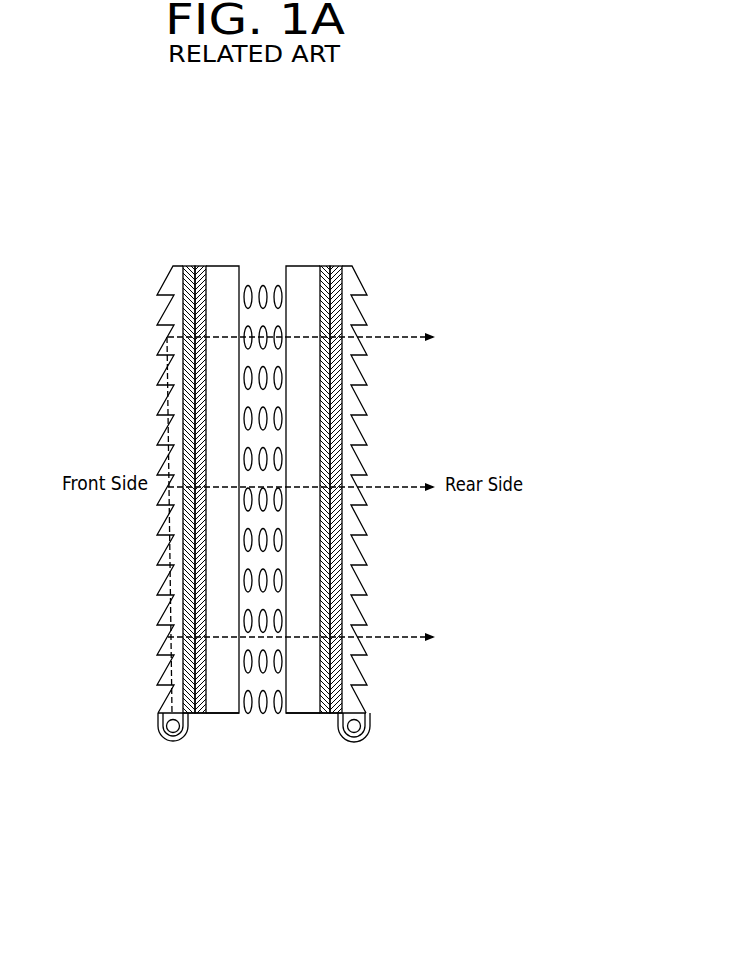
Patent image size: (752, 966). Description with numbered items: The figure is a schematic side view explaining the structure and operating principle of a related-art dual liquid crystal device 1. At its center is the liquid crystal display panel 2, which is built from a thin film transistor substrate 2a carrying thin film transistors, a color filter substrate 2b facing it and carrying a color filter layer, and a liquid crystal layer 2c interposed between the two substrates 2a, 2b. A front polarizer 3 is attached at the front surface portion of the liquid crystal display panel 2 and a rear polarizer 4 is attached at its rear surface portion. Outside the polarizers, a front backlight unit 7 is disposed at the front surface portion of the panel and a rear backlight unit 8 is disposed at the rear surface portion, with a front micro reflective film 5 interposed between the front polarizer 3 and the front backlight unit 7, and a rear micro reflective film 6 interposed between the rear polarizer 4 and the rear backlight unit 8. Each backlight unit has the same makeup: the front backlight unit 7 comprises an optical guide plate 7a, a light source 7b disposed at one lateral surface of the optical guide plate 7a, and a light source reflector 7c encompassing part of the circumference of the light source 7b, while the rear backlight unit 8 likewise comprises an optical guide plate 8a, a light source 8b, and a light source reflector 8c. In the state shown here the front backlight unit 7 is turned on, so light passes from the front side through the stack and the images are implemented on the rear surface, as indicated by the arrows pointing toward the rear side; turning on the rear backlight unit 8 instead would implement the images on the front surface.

The dual liquid crystal device 1 is at (381, 251).
The liquid crystal display panel 2 is at (217, 211).
The thin film transistor substrate 2a is at (226, 278).
The color filter substrate 2b is at (300, 278).
The liquid crystal layer 2c is at (263, 283).
The front polarizer 3 is at (198, 267).
The rear polarizer 4 is at (325, 267).
The front micro reflective film 5 is at (188, 267).
The rear micro reflective film 6 is at (333, 267).
The front backlight unit 7 is at (110, 795).
The optical guide plate 7a is at (160, 700).
The light source 7b is at (170, 737).
The light source reflector 7c is at (159, 737).
The rear backlight unit 8 is at (328, 795).
The optical guide plate 8a is at (363, 700).
The light source 8b is at (355, 737).
The light source reflector 8c is at (369, 737).